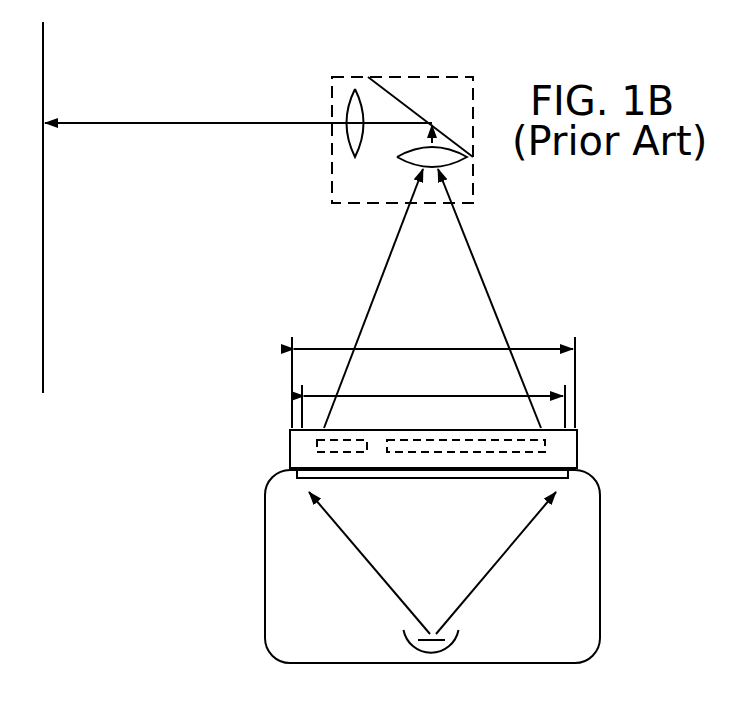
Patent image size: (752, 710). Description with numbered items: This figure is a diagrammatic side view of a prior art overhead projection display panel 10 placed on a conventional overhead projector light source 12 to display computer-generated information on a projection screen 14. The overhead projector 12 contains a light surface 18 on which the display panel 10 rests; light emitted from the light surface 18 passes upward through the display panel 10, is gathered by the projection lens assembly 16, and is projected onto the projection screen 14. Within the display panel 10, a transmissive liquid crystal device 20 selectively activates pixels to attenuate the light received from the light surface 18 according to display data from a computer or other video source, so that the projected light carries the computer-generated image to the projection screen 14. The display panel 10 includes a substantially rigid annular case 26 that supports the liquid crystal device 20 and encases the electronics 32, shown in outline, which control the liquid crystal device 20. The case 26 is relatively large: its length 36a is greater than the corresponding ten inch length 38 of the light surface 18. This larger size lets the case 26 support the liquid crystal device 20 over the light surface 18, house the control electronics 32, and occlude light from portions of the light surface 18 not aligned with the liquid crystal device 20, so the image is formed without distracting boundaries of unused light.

The overhead projection display panel 10 is at (580, 434).
The overhead projector light source 12 is at (603, 527).
The projection screen 14 is at (43, 340).
The projection lens assembly 16 is at (452, 162).
The light surface 18 is at (407, 480).
The transmissive liquid crystal device 20 is at (423, 438).
The annular case 26 is at (577, 460).
The electronics 32 is at (347, 438).
The length 36a is at (436, 346).
The length 38 is at (382, 392).